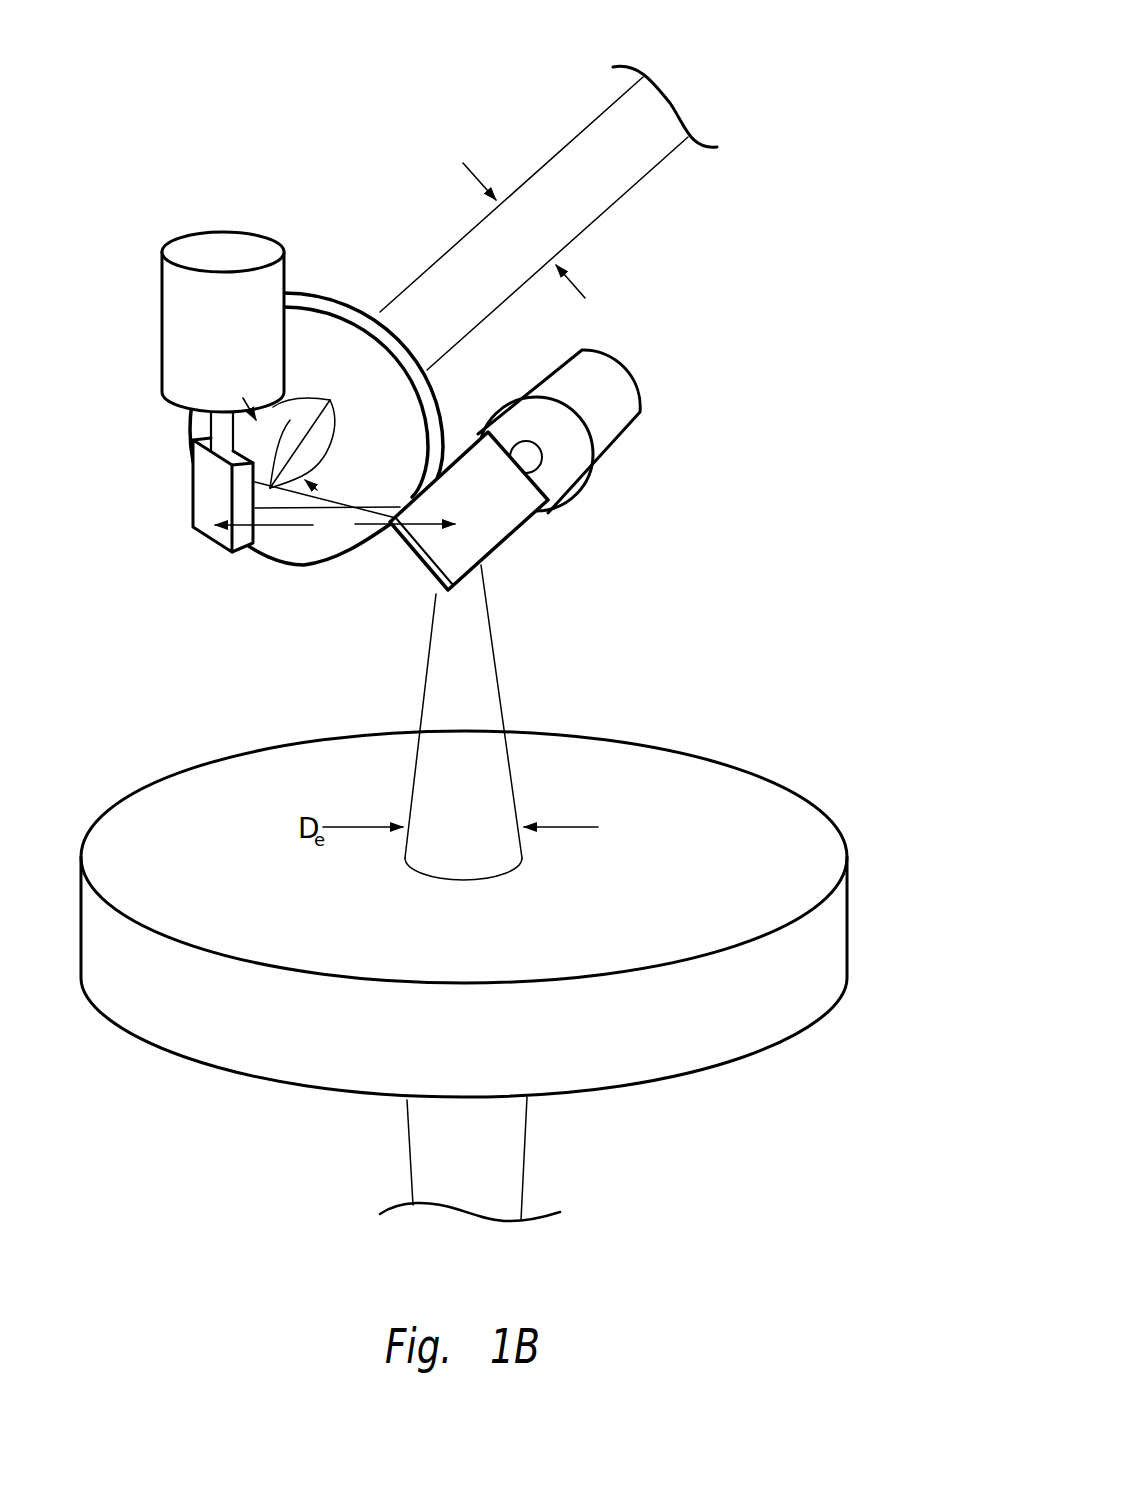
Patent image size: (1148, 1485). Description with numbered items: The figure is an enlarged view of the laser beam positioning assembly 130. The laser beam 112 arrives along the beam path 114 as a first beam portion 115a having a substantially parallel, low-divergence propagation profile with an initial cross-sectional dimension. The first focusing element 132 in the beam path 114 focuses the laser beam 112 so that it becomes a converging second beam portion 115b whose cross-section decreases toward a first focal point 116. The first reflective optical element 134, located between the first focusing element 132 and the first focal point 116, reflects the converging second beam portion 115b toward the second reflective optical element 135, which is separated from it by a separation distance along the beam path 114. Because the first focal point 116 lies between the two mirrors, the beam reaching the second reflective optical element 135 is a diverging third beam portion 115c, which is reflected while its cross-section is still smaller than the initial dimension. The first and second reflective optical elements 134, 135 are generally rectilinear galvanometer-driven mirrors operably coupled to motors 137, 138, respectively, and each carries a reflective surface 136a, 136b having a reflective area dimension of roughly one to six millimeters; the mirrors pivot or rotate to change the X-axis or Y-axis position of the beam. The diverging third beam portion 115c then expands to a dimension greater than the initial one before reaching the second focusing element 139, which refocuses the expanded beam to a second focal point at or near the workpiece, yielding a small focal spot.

The laser beam positioning assembly 130 is at (343, 101).
The laser beam 112 is at (572, 145).
The beam path 114 is at (655, 190).
The first beam portion 115a is at (421, 235).
The second beam portion 115b is at (290, 420).
The third beam portion 115c is at (394, 502).
The first focal point 116 is at (351, 495).
The first focusing element 132 is at (320, 330).
The first reflective optical element 134 is at (202, 510).
The second reflective optical element 135 is at (510, 512).
The reflective surface 136a is at (262, 542).
The reflective surface 136b is at (413, 568).
The motor 137 is at (178, 315).
The motor 138 is at (620, 392).
The second focusing element 139 is at (838, 950).